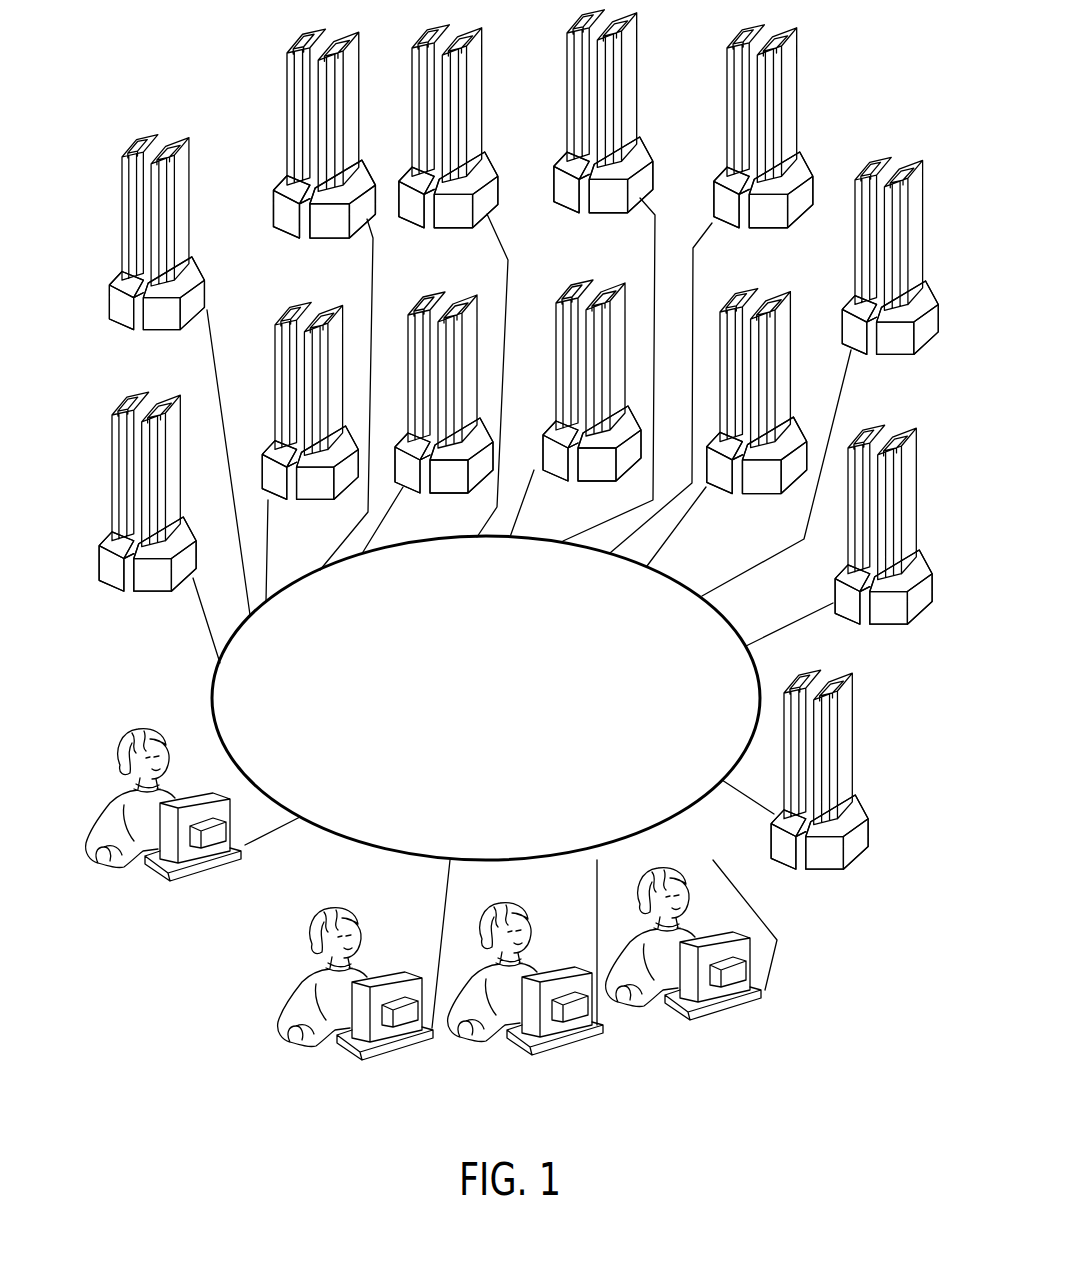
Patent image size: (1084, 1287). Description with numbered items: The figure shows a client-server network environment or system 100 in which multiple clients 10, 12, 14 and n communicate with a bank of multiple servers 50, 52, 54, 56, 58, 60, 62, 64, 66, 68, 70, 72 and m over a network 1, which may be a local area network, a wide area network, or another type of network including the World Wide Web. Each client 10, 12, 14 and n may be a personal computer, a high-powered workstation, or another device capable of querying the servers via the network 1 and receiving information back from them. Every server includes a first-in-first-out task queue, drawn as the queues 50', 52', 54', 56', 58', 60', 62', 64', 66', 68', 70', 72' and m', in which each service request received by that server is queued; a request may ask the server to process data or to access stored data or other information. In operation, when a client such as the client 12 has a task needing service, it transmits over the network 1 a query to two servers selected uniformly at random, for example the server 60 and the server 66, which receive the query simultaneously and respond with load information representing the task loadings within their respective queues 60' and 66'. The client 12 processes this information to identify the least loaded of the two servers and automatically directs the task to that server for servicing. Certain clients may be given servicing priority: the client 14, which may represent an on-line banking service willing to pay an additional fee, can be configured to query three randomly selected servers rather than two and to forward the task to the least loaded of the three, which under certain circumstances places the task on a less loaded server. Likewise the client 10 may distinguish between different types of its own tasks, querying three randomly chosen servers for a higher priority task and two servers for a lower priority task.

The client-server network environment 100 is at (864, 77).
The network 1 is at (213, 692).
The client 10 is at (150, 876).
The client 12 is at (348, 1052).
The client 14 is at (521, 1050).
The client n is at (675, 1012).
The server 50 is at (844, 787).
The first-in-first-out task queue 50' is at (853, 832).
The server 52 is at (897, 539).
The first-in-first-out task queue 52' is at (898, 572).
The server 54 is at (765, 404).
The first-in-first-out task queue 54' is at (768, 435).
The server 56 is at (582, 386).
The first-in-first-out task queue 56' is at (577, 431).
The server 58 is at (452, 406).
The first-in-first-out task queue 58' is at (432, 438).
The server 60 is at (295, 416).
The first-in-first-out task queue 60' is at (296, 449).
The server 62 is at (134, 509).
The first-in-first-out task queue 62' is at (133, 539).
The server 64 is at (898, 266).
The first-in-first-out task queue 64' is at (903, 301).
The server 66 is at (776, 143).
The first-in-first-out task queue 66' is at (778, 173).
The server 68 is at (616, 130).
The first-in-first-out task queue 68' is at (620, 164).
The server 70 is at (461, 143).
The first-in-first-out task queue 70' is at (465, 172).
The server 72 is at (329, 149).
The first-in-first-out task queue 72' is at (333, 177).
The server m is at (169, 250).
The first-in-first-out task queue m' is at (175, 286).